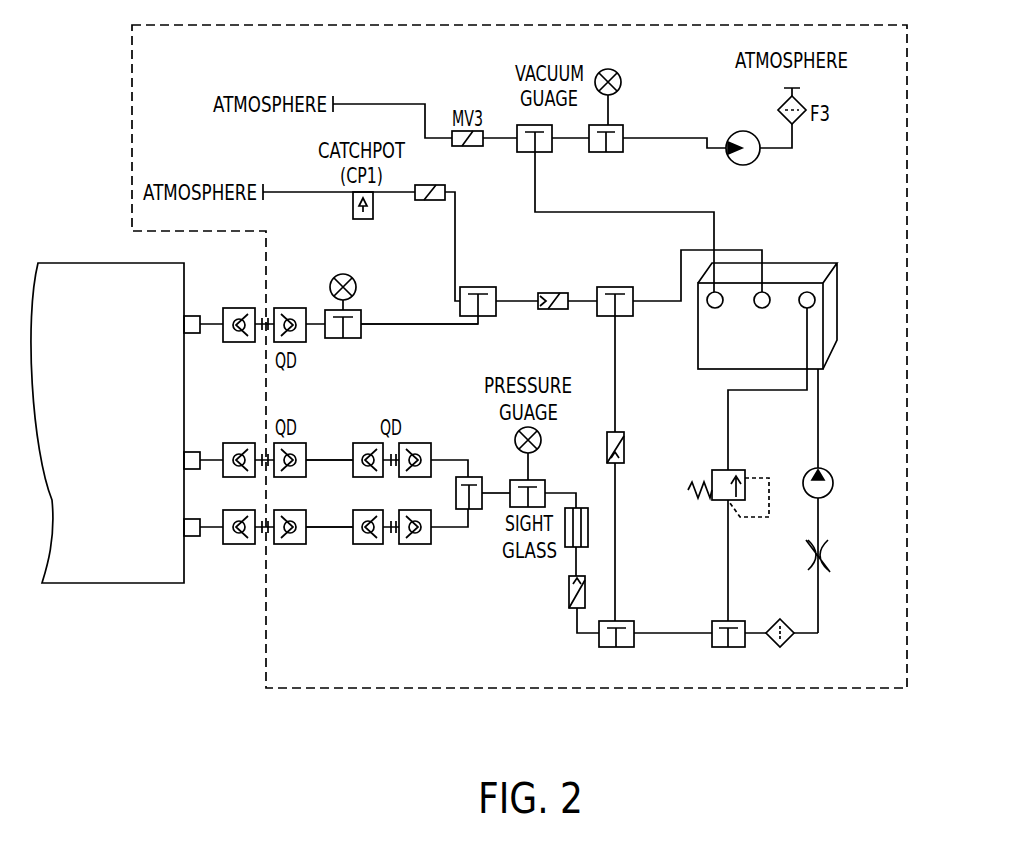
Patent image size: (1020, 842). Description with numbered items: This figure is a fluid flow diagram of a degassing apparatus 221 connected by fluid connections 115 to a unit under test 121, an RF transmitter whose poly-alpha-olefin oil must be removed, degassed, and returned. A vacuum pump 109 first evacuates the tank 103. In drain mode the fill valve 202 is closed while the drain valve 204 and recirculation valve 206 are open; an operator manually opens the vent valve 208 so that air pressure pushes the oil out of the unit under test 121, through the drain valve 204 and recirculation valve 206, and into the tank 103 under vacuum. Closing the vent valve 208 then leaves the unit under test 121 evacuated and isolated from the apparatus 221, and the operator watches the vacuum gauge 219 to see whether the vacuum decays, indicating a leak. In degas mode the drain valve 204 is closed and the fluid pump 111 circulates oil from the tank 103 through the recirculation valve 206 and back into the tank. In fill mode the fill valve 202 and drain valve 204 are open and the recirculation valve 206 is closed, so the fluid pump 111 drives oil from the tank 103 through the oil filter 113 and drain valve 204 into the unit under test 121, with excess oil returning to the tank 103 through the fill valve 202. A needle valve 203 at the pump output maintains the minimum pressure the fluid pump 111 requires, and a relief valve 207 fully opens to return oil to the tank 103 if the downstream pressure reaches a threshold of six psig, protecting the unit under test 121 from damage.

The tank 103 is at (838, 305).
The vacuum pump 109 is at (760, 158).
The fluid pump 111 is at (826, 472).
The oil filter 113 is at (790, 645).
The fluid connections 115 is at (382, 328).
The unit under test (UUT) 121 is at (93, 437).
The fill valve 202 is at (556, 291).
The needle valve 203 is at (832, 566).
The drain valve 204 is at (565, 596).
The recirculation valve 206 is at (625, 443).
The relief valve 207 is at (742, 468).
The vent valve 208 is at (445, 189).
The vacuum gauge 219 is at (356, 292).
The apparatus 221 is at (669, 690).